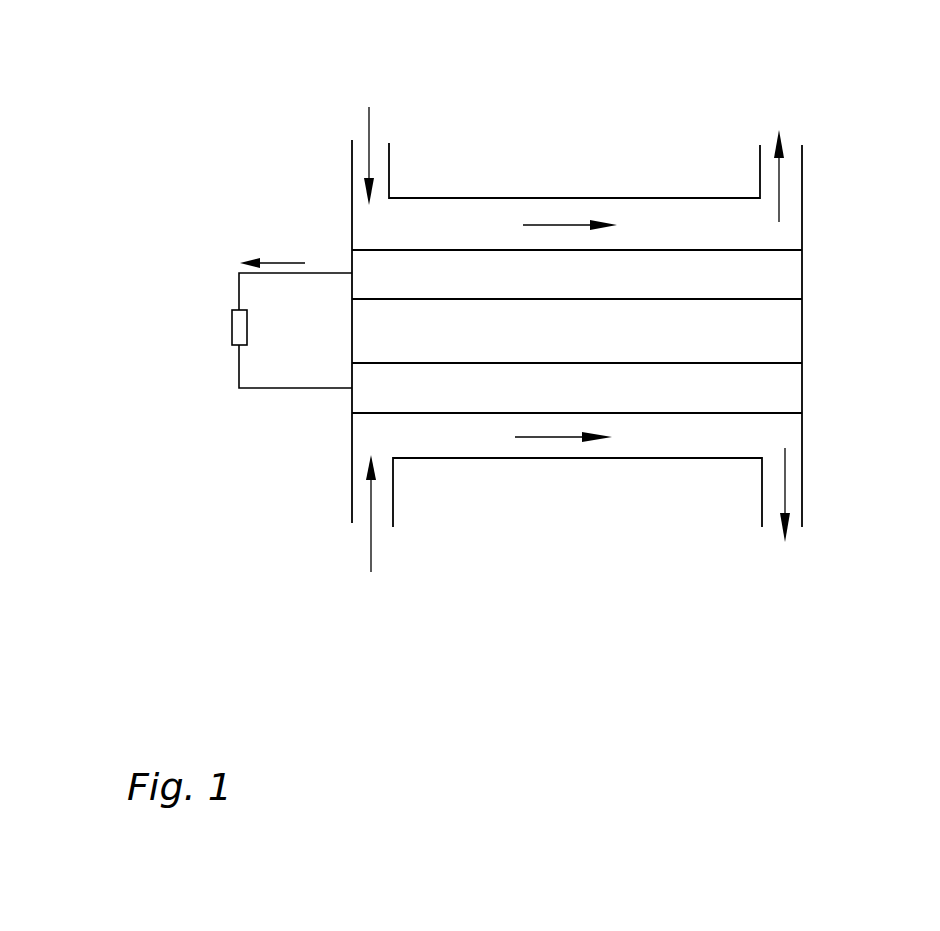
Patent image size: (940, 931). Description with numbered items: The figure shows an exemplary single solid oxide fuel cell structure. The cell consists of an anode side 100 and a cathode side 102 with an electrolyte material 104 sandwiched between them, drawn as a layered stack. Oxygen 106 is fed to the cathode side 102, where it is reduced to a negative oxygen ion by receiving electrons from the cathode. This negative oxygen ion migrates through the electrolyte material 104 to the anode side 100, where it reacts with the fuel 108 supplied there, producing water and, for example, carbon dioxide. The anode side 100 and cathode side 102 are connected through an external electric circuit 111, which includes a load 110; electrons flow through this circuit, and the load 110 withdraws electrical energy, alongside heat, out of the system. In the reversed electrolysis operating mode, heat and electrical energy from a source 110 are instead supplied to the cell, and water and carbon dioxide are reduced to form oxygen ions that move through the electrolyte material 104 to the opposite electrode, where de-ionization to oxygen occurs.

The anode side 100 is at (773, 272).
The cathode side 102 is at (770, 383).
The electrolyte material 104 is at (777, 328).
The oxygen 106 is at (370, 556).
The fuel 108 is at (370, 118).
The load 110 is at (232, 330).
The external electric circuit 111 is at (220, 262).